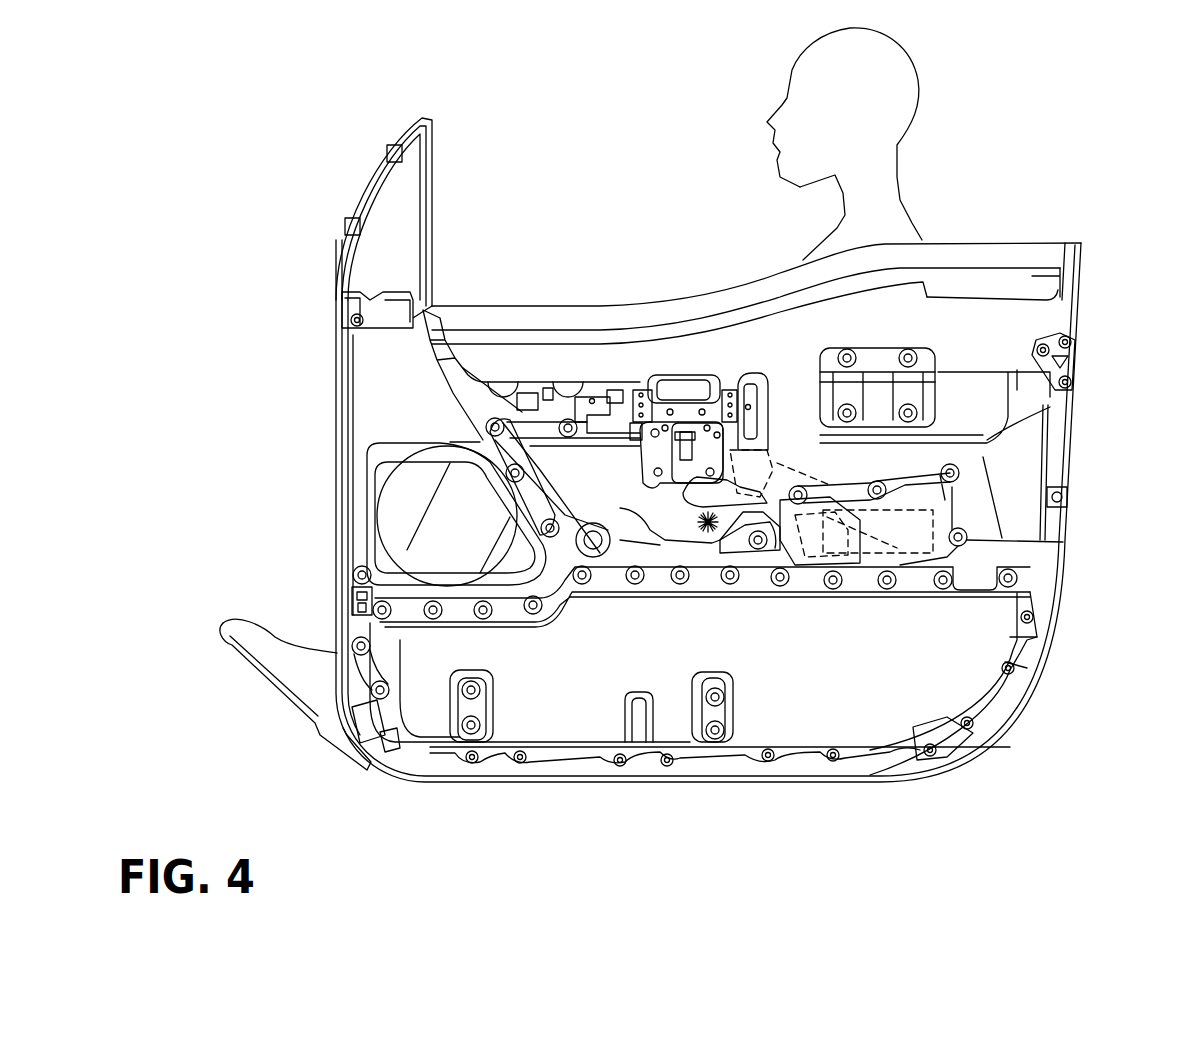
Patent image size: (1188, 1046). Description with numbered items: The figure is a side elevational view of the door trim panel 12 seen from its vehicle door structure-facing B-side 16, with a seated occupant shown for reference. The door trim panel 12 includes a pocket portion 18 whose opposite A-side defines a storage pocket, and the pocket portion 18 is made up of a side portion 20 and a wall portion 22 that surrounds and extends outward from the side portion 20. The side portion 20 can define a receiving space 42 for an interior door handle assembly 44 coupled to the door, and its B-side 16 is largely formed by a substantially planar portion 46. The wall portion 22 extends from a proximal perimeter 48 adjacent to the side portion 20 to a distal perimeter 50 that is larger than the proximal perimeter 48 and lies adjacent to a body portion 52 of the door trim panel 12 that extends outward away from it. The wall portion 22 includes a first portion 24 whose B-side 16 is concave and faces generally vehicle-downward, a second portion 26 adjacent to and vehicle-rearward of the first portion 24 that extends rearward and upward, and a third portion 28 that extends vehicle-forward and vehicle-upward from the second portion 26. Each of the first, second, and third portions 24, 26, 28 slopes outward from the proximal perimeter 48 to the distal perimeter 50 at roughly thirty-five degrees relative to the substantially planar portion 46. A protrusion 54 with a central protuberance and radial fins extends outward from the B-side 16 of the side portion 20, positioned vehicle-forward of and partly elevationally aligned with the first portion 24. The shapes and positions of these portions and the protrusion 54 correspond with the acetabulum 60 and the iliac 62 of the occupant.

The door trim panel 12 is at (579, 448).
The B-side 16 is at (607, 457).
The pocket portion 18 is at (565, 487).
The side portion 20 is at (685, 432).
The wall portion 22 is at (740, 549).
The first portion 24 is at (785, 507).
The second portion 26 is at (807, 494).
The third portion 28 is at (742, 447).
The receiving space 42 is at (731, 462).
The interior door handle assembly 44 is at (708, 450).
The substantially planar portion 46 is at (663, 522).
The proximal perimeter 48 is at (778, 468).
The distal perimeter 50 is at (808, 507).
The body portion 52 is at (697, 540).
The protrusion 54 is at (703, 528).
The acetabulum 60 is at (785, 550).
The iliac 62 is at (827, 517).